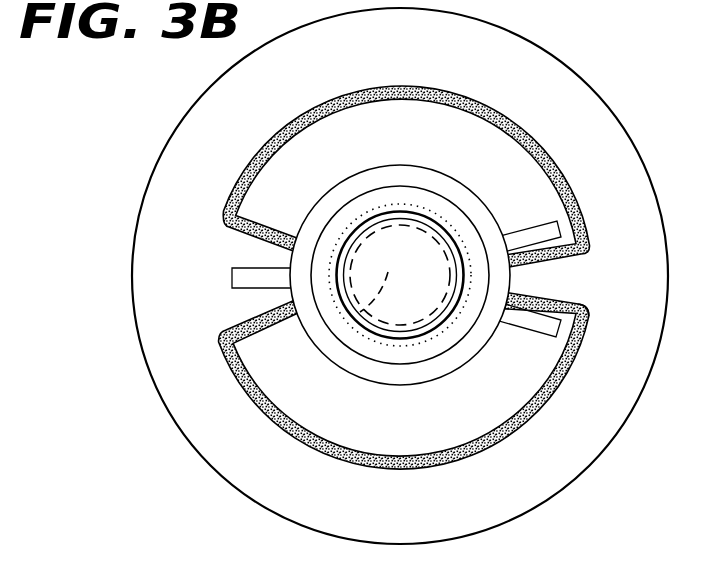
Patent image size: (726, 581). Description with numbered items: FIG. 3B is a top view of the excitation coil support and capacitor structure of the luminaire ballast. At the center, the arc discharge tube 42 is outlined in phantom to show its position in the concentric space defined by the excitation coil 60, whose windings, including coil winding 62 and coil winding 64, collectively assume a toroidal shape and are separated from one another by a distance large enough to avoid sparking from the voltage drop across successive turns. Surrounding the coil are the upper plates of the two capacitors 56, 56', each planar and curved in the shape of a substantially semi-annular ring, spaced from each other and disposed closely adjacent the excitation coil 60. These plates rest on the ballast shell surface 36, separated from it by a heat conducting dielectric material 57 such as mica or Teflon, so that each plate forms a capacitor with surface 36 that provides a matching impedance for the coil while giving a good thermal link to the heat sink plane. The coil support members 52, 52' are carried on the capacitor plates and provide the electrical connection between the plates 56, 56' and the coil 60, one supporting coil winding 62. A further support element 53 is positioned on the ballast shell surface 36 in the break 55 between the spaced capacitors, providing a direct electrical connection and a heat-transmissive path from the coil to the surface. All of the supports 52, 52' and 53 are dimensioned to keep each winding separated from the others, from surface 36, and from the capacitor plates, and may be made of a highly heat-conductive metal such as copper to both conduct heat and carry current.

The ballast shell surface 36 is at (195, 168).
The arc discharge tube 42 is at (400, 275).
The coil support member 52 is at (561, 313).
The coil support member 52' is at (521, 216).
The support element 53 is at (253, 277).
The break 55 is at (253, 303).
The capacitor plate 56 is at (404, 405).
The capacitor plate 56' is at (406, 150).
The heat conducting dielectric material 57 is at (543, 406).
The excitation coil 60 is at (392, 251).
The coil winding 62 is at (372, 183).
The coil winding 64 is at (418, 207).